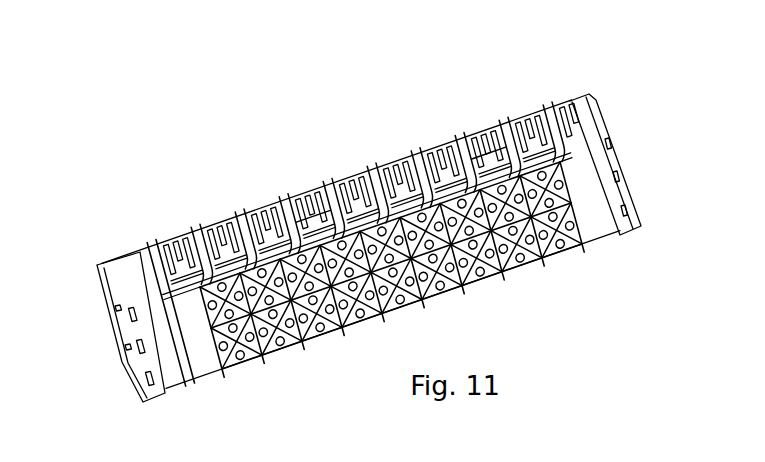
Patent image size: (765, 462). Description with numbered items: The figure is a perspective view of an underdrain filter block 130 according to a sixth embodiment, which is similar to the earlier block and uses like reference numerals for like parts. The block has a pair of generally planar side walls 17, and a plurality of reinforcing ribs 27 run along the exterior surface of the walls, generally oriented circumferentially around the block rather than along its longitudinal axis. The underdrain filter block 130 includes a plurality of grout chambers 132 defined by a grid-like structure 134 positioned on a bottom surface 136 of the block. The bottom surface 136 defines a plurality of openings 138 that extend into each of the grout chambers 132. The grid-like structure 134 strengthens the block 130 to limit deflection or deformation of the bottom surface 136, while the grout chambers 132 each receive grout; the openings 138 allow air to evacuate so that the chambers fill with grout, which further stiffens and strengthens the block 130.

The underdrain filter block 130 is at (123, 223).
The grout chambers 132 is at (245, 220).
The grid-like structure 134 is at (327, 217).
The bottom surface 136 is at (178, 308).
The openings 138 is at (280, 217).
The reinforcing ribs 27 is at (172, 243).
The side walls 17 is at (557, 110).